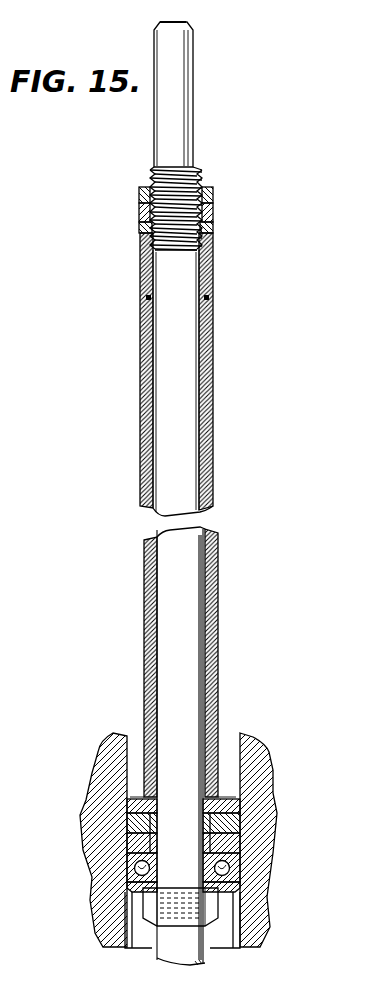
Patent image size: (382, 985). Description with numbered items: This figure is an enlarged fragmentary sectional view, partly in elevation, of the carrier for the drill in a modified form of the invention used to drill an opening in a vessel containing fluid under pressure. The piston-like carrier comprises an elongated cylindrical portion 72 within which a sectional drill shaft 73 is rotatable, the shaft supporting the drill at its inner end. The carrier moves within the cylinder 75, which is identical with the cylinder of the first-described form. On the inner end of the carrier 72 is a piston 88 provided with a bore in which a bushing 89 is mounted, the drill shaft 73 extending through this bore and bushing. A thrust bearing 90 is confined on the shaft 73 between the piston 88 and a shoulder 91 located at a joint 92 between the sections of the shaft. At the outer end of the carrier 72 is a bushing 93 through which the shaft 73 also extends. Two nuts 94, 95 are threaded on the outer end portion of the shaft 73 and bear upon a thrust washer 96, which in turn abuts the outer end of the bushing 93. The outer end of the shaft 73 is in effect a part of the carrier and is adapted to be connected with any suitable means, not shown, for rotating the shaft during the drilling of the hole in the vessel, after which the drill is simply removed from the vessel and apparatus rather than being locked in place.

The elongated cylindrical portion 72 is at (224, 669).
The drill shaft 73 is at (172, 656).
The cylinder 75 is at (277, 755).
The piston 88 is at (134, 806).
The bushing 89 is at (214, 831).
The thrust bearing 90 is at (102, 891).
The shoulder 91 is at (152, 903).
The joint 92 is at (210, 905).
The bushing 93 is at (210, 262).
The nut 94 is at (213, 193).
The nut 95 is at (213, 220).
The thrust washer 96 is at (140, 226).